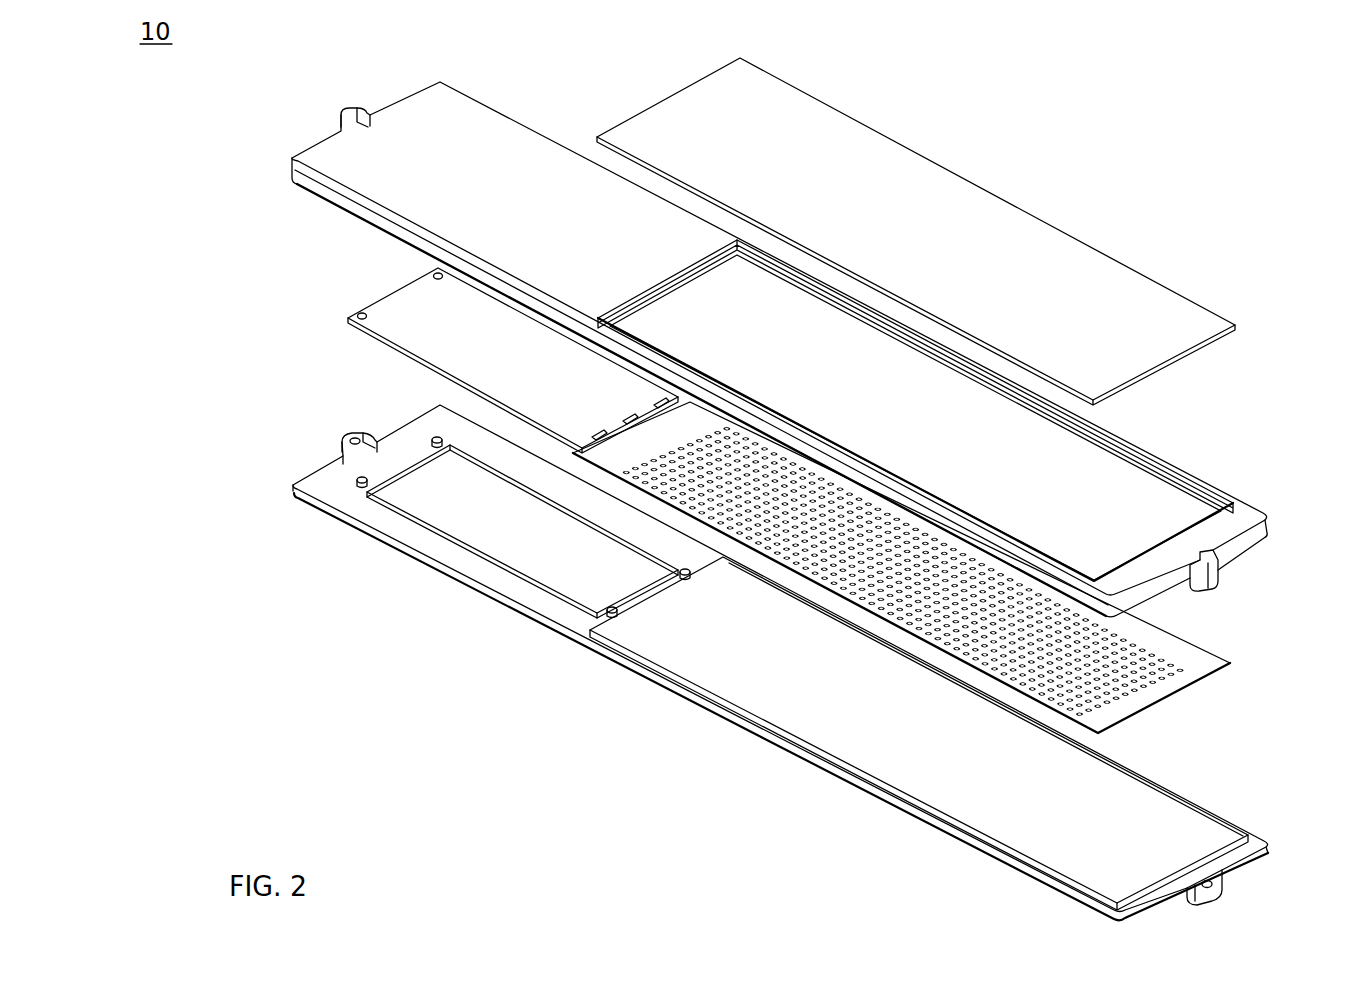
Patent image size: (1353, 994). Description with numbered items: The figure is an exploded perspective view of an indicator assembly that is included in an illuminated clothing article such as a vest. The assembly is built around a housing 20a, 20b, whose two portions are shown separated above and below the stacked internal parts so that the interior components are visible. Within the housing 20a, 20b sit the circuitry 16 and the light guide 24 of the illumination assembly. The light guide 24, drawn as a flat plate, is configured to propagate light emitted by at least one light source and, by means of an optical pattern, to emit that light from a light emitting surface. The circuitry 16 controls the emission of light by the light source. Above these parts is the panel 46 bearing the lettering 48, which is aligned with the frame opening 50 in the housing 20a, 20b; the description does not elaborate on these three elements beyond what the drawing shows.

The housing 20a is at (779, 321).
The housing 20b is at (340, 478).
The circuitry 16 is at (410, 317).
The light guide 24 is at (1182, 668).
The graphic overlay panel 46 is at (916, 231).
The raised lettering indicia 48 is at (1088, 297).
The window frame opening 50 is at (1130, 487).